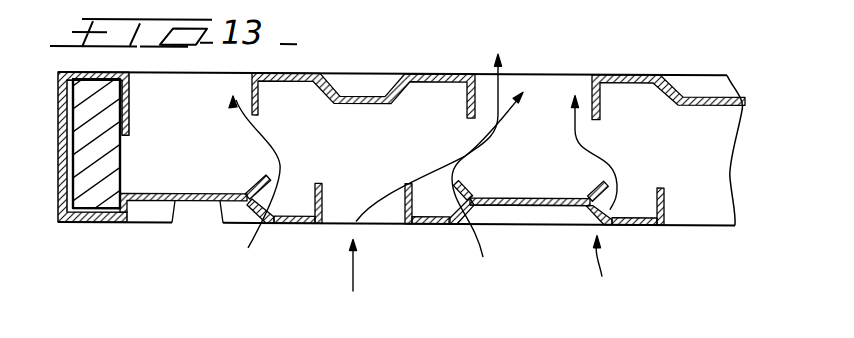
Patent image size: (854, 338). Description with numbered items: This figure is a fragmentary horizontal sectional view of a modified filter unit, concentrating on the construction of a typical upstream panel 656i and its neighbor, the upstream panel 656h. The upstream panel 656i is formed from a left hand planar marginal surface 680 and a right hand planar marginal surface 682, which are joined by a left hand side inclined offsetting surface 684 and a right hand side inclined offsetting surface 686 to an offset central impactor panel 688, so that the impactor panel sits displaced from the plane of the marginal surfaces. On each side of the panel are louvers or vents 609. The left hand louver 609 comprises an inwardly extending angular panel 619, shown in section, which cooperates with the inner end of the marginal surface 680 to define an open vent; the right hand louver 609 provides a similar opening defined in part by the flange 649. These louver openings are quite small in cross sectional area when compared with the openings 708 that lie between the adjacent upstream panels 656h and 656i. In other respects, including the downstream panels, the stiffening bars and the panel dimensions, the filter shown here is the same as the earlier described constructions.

The upstream panel 656h is at (158, 207).
The openings 708 is at (337, 207).
The left hand planar marginal surface 680 is at (426, 222).
The left hand side inwardly extending angular panel 619 is at (445, 198).
The left hand side inclined offsetting surface 684 is at (475, 206).
The louvers or vents 609 is at (465, 203).
The offset central impactor panel 688 is at (498, 198).
The upstream panel 656i is at (553, 203).
The flange 649 is at (597, 188).
The right hand side inclined offsetting surface 686 is at (605, 219).
The right hand planar marginal surface 682 is at (643, 223).